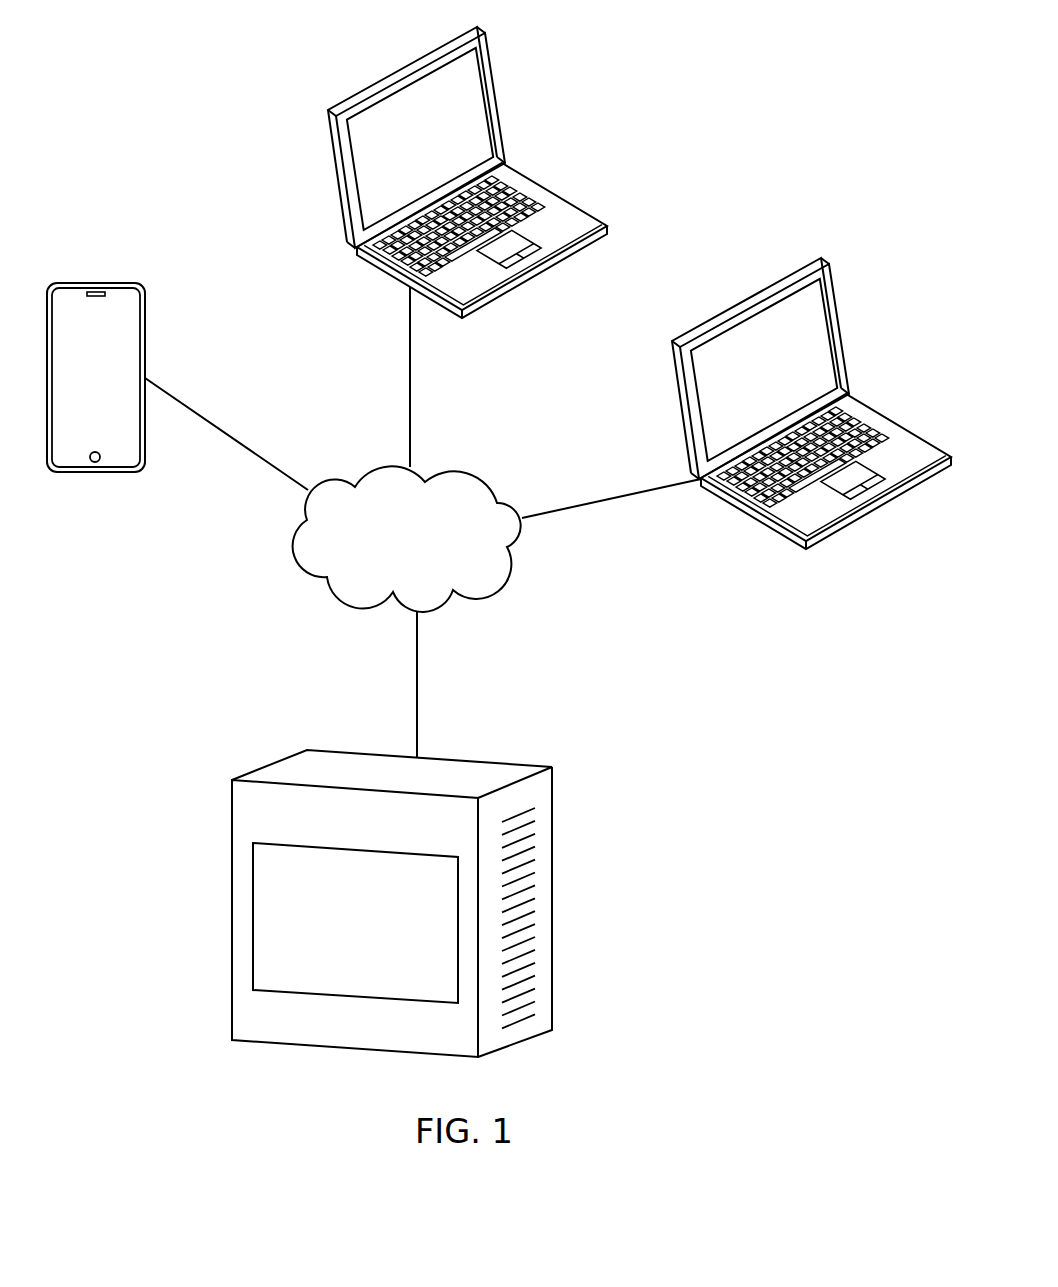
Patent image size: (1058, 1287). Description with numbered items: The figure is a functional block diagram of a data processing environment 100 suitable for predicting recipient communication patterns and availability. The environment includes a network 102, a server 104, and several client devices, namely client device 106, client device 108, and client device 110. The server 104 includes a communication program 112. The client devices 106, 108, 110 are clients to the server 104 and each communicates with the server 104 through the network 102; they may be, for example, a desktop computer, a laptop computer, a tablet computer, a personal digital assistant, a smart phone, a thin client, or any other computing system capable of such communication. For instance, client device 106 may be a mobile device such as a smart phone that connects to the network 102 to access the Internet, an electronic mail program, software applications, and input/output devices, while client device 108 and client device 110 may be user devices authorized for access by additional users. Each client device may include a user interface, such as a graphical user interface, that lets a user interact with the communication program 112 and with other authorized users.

The data processing environment 100 is at (818, 103).
The network 102 is at (513, 553).
The server 104 is at (428, 866).
The client device 106 is at (145, 316).
The client device 108 is at (553, 188).
The client device 110 is at (899, 423).
The communication program 112 is at (375, 980).